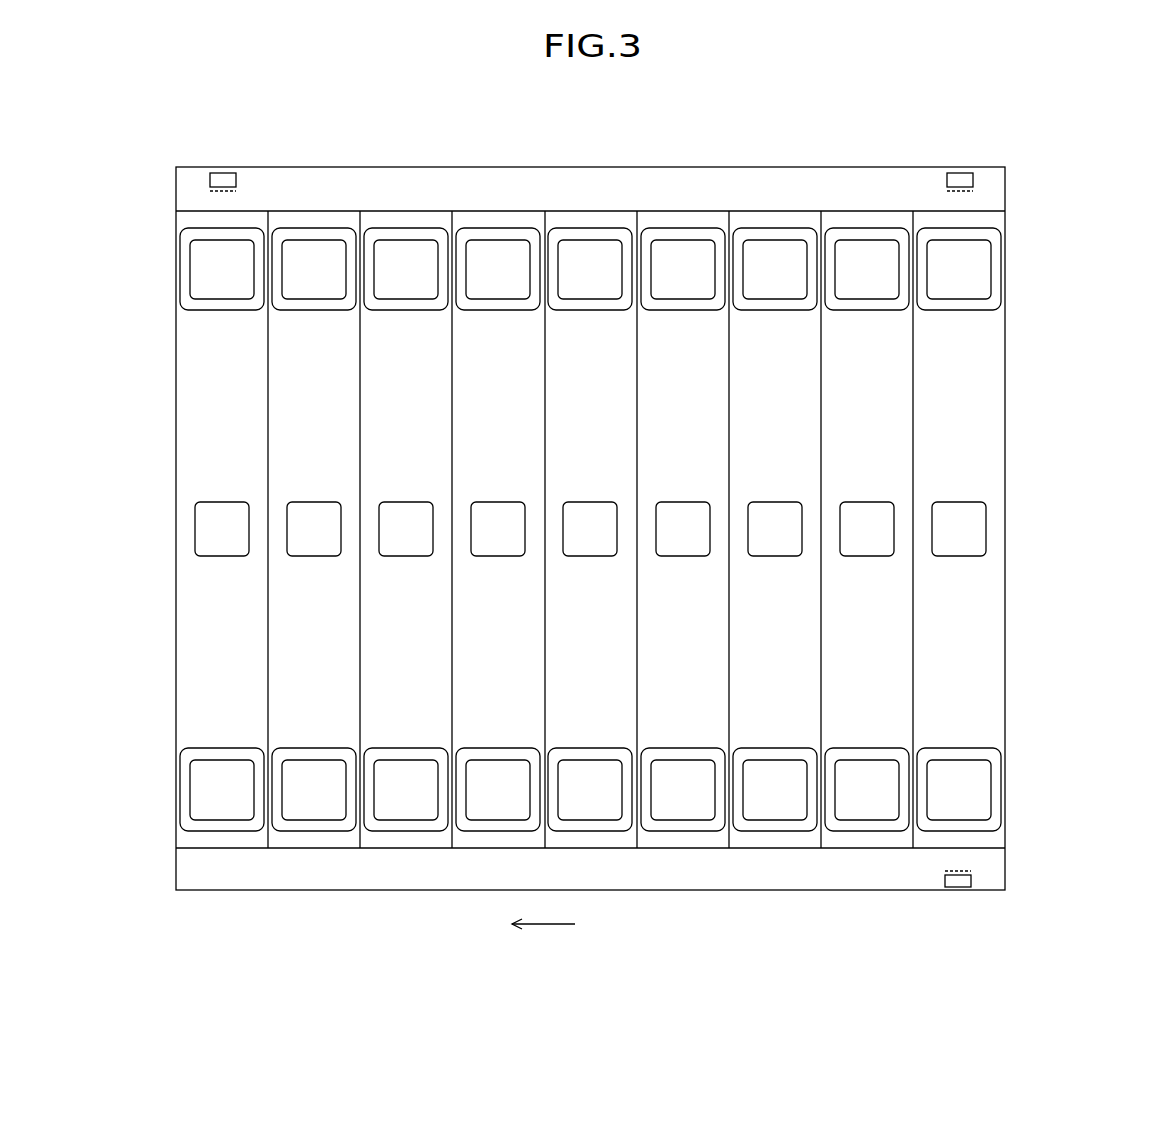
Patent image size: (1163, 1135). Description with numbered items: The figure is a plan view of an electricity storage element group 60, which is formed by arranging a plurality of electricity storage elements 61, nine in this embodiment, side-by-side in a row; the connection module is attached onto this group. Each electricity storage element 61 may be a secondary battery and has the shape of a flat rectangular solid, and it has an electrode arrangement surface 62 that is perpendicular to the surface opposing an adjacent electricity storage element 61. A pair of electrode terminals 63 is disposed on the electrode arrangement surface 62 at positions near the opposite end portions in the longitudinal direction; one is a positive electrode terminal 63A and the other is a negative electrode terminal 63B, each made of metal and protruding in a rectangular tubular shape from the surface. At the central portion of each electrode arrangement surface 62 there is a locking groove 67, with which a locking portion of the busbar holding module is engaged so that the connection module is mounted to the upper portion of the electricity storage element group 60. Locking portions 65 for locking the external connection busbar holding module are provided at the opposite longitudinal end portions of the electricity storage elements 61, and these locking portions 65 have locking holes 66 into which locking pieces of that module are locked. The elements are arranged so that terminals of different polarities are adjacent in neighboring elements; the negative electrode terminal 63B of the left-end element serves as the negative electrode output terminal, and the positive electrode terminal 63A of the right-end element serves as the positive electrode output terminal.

The electricity storage element group 60 is at (655, 933).
The electricity storage element 61 is at (316, 215).
The electrode arrangement surface 62 is at (983, 357).
The electrode terminal 63 is at (610, 540).
The positive electrode terminal 63A is at (862, 270).
The negative electrode terminal 63B is at (212, 262).
The locking portion 65 is at (785, 186).
The locking hole 66 is at (226, 174).
The locking groove 67 is at (953, 503).